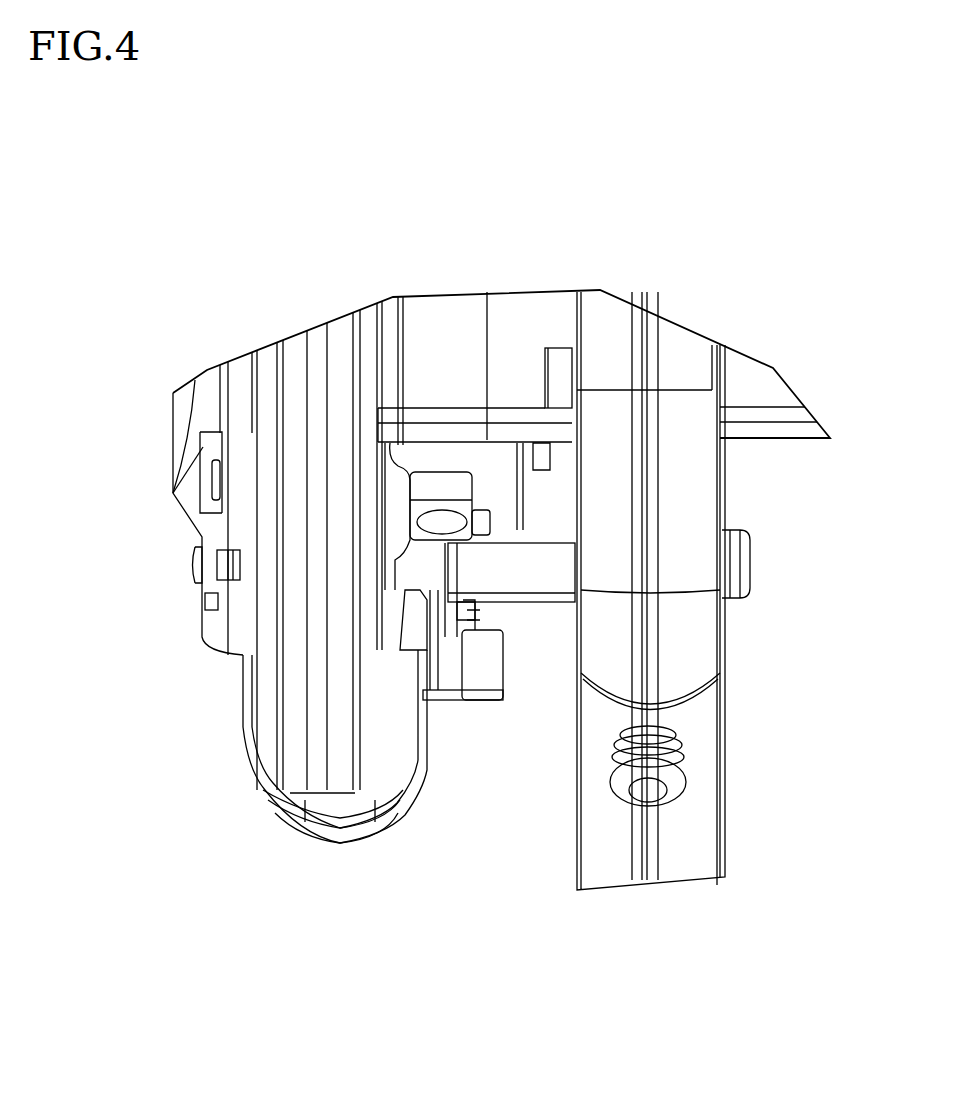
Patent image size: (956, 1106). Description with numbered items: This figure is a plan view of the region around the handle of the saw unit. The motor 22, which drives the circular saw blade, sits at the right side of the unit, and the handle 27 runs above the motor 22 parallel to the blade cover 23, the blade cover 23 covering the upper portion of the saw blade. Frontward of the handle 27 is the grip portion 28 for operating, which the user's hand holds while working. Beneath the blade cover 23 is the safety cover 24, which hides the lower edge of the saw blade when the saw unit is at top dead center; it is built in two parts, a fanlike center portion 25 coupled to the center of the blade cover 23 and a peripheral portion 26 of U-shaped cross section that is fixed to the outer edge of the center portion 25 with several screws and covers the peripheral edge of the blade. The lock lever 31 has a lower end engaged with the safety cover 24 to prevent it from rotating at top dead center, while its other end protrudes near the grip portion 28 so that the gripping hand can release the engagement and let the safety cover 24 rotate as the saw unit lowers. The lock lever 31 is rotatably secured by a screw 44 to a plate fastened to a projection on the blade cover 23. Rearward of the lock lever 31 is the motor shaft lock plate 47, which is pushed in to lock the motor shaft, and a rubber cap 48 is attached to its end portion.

The motor 22 is at (530, 313).
The blade cover 23 is at (289, 352).
The safety cover 24 is at (336, 852).
The center portion 25 is at (193, 490).
The peripheral portion 26 is at (257, 748).
The handle 27 is at (683, 347).
The grip portion for operating 28 is at (700, 478).
The lock lever 31 is at (540, 585).
The screw 44 is at (473, 697).
The motor shaft lock plate 47 is at (390, 457).
The rubber cap 48 is at (438, 490).